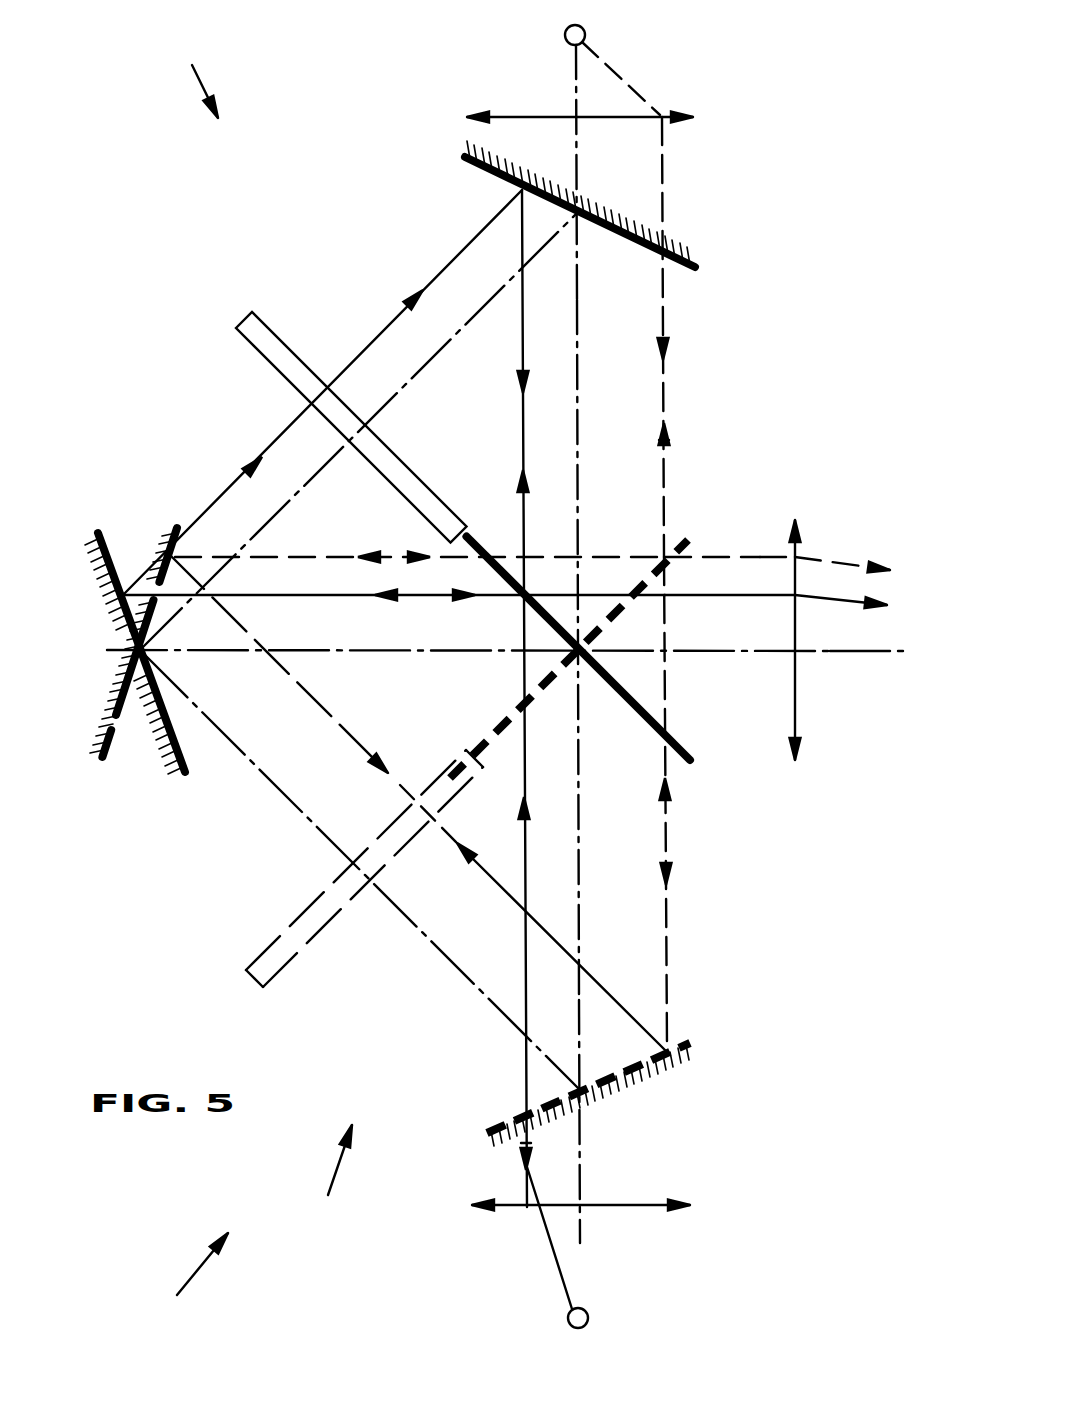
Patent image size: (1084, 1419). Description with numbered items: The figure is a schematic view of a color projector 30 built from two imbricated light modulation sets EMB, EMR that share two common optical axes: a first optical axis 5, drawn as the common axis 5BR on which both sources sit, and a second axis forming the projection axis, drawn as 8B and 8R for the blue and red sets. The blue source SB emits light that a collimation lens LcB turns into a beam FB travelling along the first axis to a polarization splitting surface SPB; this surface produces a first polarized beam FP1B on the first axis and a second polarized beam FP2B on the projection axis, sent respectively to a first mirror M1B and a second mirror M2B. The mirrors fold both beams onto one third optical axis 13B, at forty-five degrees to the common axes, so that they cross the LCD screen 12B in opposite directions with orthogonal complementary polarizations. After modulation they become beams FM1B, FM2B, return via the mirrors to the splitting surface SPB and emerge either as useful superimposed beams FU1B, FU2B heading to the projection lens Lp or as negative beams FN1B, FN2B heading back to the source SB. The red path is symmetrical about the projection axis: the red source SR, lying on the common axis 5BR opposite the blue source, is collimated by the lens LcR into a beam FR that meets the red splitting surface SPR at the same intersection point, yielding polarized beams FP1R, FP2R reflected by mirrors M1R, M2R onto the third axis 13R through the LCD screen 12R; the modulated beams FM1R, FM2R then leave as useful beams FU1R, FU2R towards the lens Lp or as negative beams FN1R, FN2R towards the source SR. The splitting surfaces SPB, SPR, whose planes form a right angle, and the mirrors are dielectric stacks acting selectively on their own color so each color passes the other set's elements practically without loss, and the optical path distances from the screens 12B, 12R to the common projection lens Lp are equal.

The color projector 30 is at (189, 1277).
The second light modulation set EMR is at (184, 78).
The first light modulation set EMB is at (321, 1176).
The first optical axis 5 is at (573, 78).
The blue light source SB is at (585, 33).
The red light source SR is at (581, 1143).
The collimation lens LcB is at (643, 112).
The collimation lens LcR is at (643, 1207).
The first mirror M1R is at (686, 260).
The first mirror M1B is at (692, 1048).
The second mirror M2R is at (97, 530).
The second mirror M2B is at (117, 747).
The LCD screen 12R is at (245, 313).
The LCD screen 12B is at (250, 977).
The third optical axis 13R is at (447, 338).
The third optical axis 13B is at (423, 933).
The polarization splitting surface SPR is at (684, 740).
The polarization splitting surface SPB is at (684, 540).
The blue beam FB is at (668, 335).
The red beam FR is at (522, 814).
The first modulated beam FM1R is at (255, 452).
The second modulated beam FM2R is at (410, 302).
The first modulated beam FM1B is at (408, 550).
The second modulated beam FM2B is at (668, 793).
The first polarized beam FP1R is at (519, 472).
The second polarized beam FP2R is at (432, 597).
The first polarized beam FP1B is at (668, 880).
The second polarized beam FP2B is at (355, 556).
The negative beam FN1R is at (523, 1143).
The negative beam FN2R is at (523, 1166).
The negative imaging beam FN1B is at (666, 443).
The negative imaging beam FN2B is at (666, 414).
The useful beam FU1R is at (833, 595).
The useful beam FU2R is at (820, 603).
The useful beam FU1B is at (756, 553).
The useful beam FU2B is at (705, 558).
The optical axis 5BR is at (577, 528).
The projection axis 8R is at (827, 652).
The projection axis 8B is at (873, 650).
The projection lens Lp is at (798, 718).